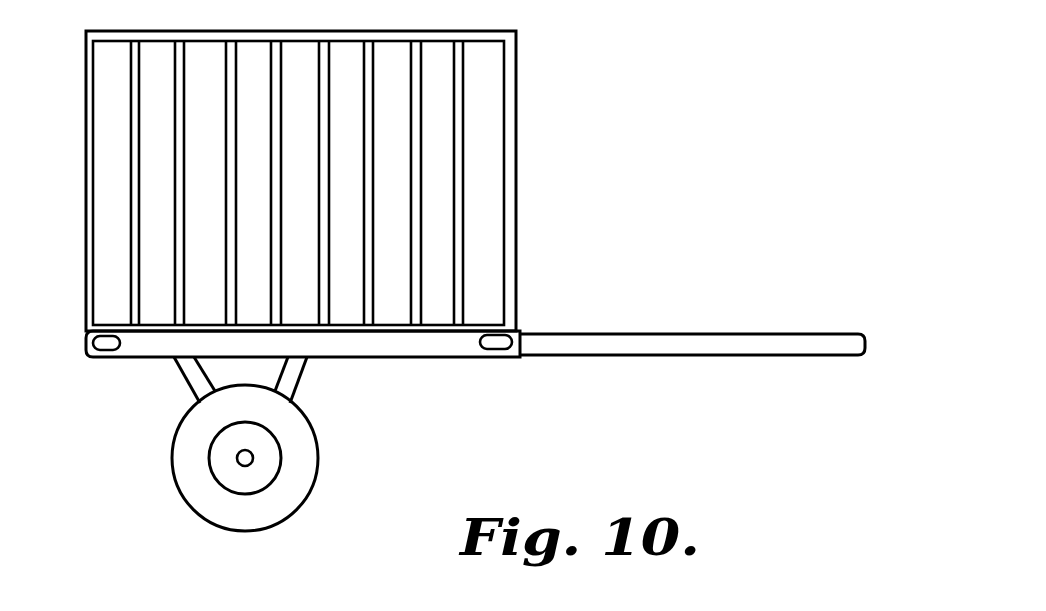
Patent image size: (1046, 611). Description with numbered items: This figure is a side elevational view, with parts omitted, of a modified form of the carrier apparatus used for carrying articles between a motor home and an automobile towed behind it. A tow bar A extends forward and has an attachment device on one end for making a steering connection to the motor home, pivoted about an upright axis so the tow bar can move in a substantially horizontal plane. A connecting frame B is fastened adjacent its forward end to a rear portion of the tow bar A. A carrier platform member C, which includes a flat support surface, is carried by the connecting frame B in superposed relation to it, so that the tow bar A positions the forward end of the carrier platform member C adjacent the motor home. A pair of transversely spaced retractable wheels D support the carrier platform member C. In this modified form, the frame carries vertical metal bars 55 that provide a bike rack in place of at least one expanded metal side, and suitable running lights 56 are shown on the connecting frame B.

The vertical metal bars 55 is at (459, 133).
The carrier platform member C is at (212, 324).
The running lights 56 is at (106, 350).
The connecting frame B is at (350, 350).
The tow bar A is at (652, 337).
The retractable wheels D is at (194, 501).